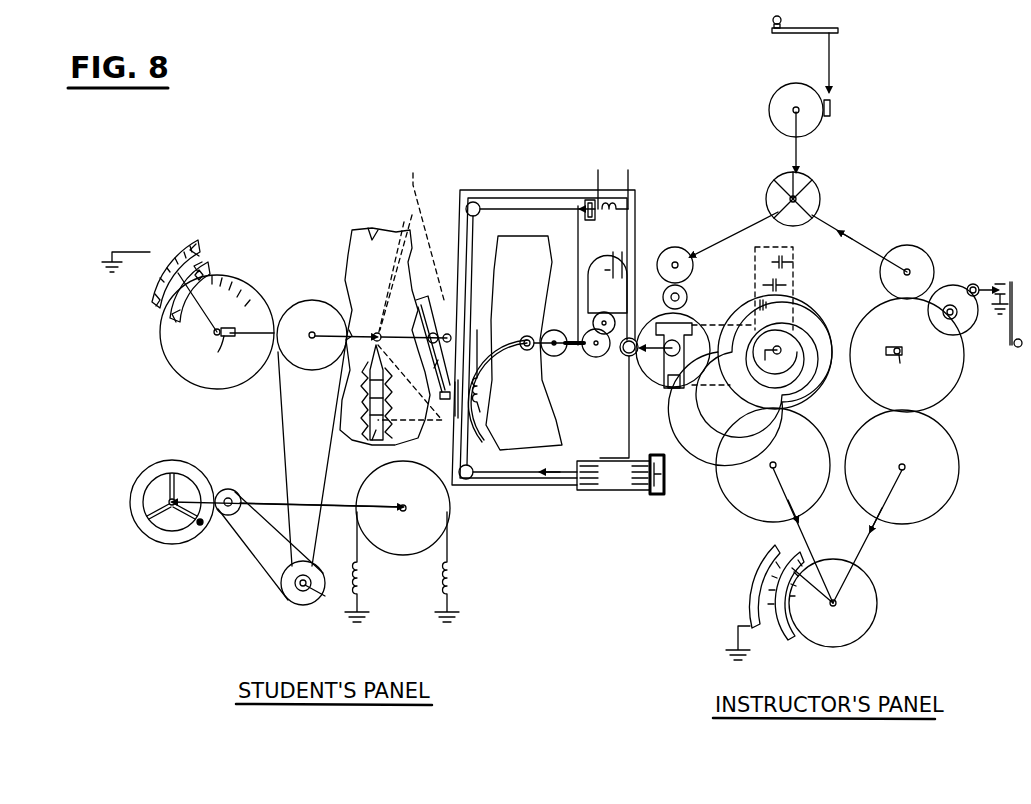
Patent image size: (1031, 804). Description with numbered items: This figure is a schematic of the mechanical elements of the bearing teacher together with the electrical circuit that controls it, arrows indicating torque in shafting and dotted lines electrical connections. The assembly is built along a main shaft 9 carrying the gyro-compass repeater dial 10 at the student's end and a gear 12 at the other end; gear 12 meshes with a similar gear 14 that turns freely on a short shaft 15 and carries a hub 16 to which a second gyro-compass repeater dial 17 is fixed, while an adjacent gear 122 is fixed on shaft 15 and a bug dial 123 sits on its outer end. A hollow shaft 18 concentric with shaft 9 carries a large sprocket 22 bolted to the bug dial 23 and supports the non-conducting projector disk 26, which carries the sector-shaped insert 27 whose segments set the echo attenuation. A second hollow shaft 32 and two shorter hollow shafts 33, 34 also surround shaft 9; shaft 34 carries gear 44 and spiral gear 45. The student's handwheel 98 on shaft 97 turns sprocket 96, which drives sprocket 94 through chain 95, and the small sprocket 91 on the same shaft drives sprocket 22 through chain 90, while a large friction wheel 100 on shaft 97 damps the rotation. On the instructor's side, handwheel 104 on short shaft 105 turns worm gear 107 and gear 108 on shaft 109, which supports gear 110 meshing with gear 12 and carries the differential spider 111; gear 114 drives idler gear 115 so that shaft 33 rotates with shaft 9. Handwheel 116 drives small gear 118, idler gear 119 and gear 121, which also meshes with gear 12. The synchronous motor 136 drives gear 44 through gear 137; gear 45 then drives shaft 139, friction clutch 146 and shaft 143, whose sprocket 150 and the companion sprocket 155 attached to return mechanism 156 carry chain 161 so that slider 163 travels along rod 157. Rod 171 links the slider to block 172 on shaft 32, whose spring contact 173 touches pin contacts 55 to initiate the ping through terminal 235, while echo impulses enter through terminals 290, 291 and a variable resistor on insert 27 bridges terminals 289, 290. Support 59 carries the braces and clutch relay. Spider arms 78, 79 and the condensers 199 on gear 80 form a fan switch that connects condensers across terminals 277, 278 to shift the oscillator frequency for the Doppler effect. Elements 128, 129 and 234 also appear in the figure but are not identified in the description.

The main shaft 9 is at (545, 328).
The gyro-compass repeater dial 10 is at (170, 348).
The gear 12 is at (948, 384).
The gear 14 is at (950, 472).
The short shaft 15 is at (800, 525).
The hub 16 is at (875, 548).
The second gyro-compass repeater dial 17 is at (864, 624).
The short shaft 18 is at (340, 314).
The large sprocket 22 is at (336, 356).
The bug dial 23 is at (165, 290).
The projector disk 26 is at (404, 432).
The insert 27 is at (372, 440).
The second hollow shaft 32 is at (584, 354).
The hollow shaft 33 is at (633, 358).
The hollow shaft 34 is at (531, 352).
The gear 44 is at (594, 358).
The spiral gear 45 is at (560, 354).
The pin contacts 55 is at (526, 352).
The support 59 is at (630, 456).
The spider arms 78 is at (692, 320).
The spider arms 79 is at (670, 388).
The gear 80 is at (808, 386).
The chain 90 is at (284, 410).
The small sprocket 91 is at (310, 590).
The larger sprocket 94 is at (304, 606).
The chain 95 is at (250, 555).
The sprocket 96 is at (234, 490).
The shaft 97 is at (276, 499).
The student's handwheel 98 is at (172, 462).
The friction wheel 100 is at (432, 546).
The handwheel 104 is at (838, 31).
The short shaft 105 is at (829, 63).
The worm gear 107 is at (832, 108).
The gear 108 is at (793, 96).
The shaft 109 is at (800, 158).
The gear 110 is at (912, 248).
The spider 111 is at (815, 191).
The additional gear 114 is at (694, 268).
The idler gear 115 is at (690, 296).
The handwheel 116 is at (1011, 282).
The small gear 118 is at (975, 284).
The idler gear 119 is at (962, 288).
The gear 121 is at (956, 320).
The gear 122 is at (812, 426).
The bug dial 123 is at (800, 552).
The outer contact segment 128 is at (188, 248).
The outer contact segment 129 is at (762, 582).
The synchronous motor 136 is at (601, 272).
The gear 137 is at (609, 336).
The shaft 139 is at (578, 236).
The shaft 143 is at (528, 206).
The friction clutch 146 is at (588, 200).
The small sprocket 150 is at (478, 202).
The sprocket 155 is at (470, 478).
The return mechanism 156 is at (628, 487).
The metal rod 157 is at (460, 200).
The chain 161 is at (466, 248).
The slider 163 is at (454, 418).
The rod 171 is at (434, 368).
The block 172 is at (432, 302).
The spring contact 173 is at (449, 349).
The condensers 199 is at (770, 262).
The pivot 234 is at (522, 332).
The terminal 235 is at (413, 173).
The terminal 277 is at (760, 393).
The terminal 278 is at (770, 388).
The terminal 289 is at (404, 219).
The terminal 290 is at (410, 197).
The terminal 291 is at (517, 335).